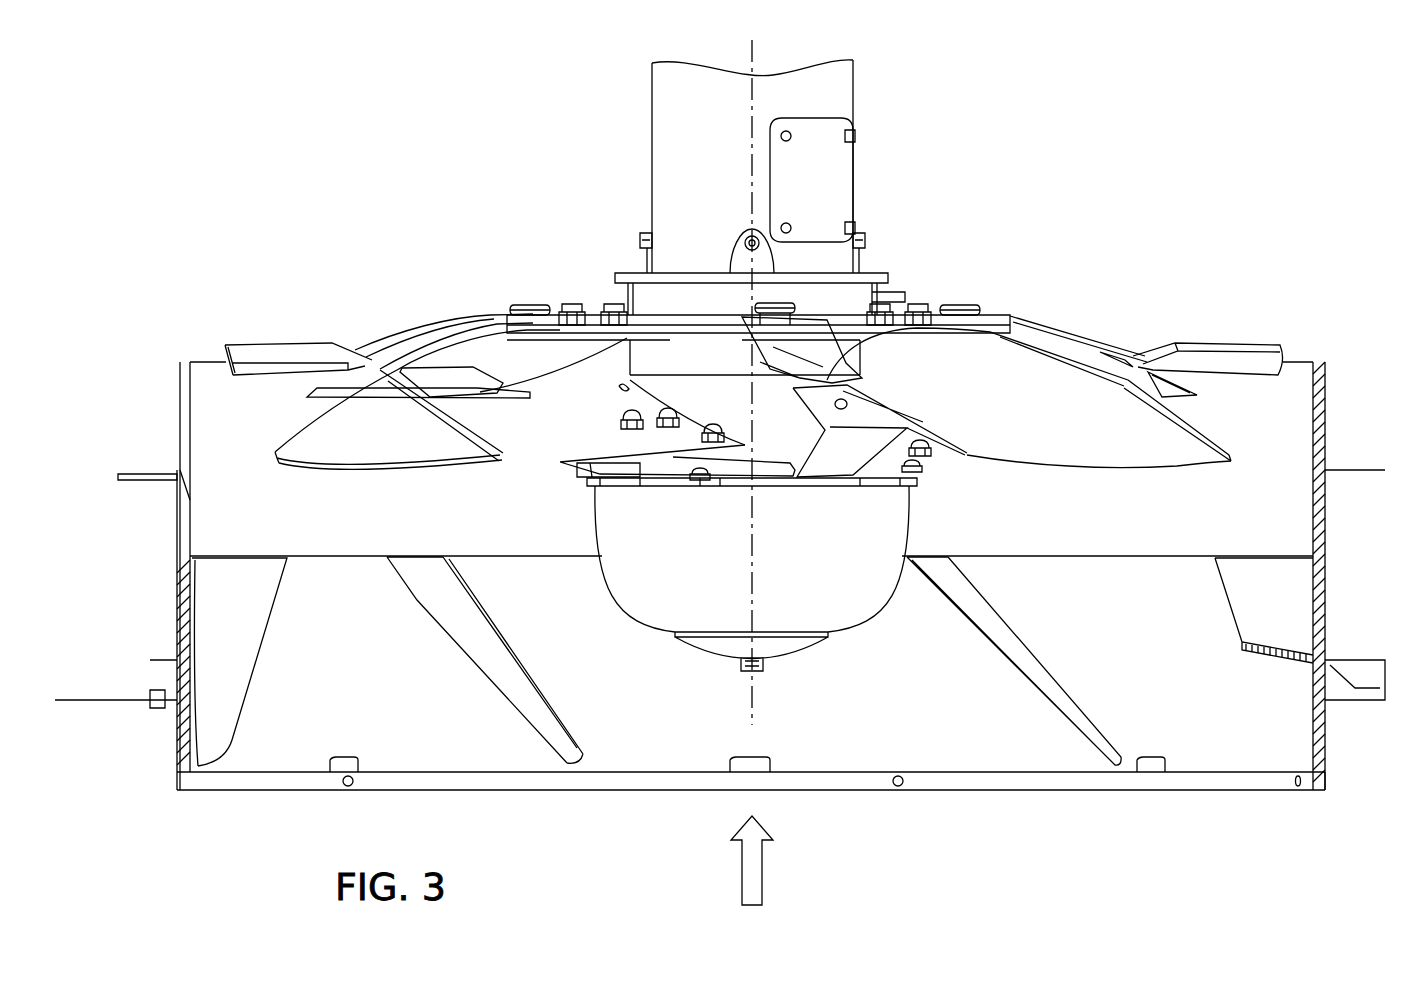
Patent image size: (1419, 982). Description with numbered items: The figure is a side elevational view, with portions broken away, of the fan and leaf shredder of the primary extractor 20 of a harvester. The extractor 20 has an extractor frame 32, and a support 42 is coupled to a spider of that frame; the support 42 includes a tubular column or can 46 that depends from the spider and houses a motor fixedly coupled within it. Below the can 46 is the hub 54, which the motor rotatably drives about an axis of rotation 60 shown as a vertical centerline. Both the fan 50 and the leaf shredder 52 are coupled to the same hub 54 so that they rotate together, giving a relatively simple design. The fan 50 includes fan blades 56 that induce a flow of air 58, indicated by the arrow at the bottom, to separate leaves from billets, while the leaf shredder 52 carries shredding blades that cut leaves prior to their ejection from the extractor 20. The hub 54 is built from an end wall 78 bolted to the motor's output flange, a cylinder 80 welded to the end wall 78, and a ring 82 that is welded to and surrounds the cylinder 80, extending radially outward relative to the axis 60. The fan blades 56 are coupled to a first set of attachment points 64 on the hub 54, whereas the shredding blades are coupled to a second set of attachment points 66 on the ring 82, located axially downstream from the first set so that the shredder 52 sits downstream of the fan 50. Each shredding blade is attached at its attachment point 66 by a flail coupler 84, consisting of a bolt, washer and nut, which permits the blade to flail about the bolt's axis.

The primary extractor 20 is at (288, 146).
The extractor frame 32 is at (1330, 600).
The support 42 is at (720, 187).
The can 46 is at (673, 181).
The fan 50 is at (1260, 447).
The leaf shredder 52 is at (1264, 327).
The hub 54 is at (922, 280).
The fan blades 56 is at (318, 465).
The flow of air 58 is at (742, 882).
The axis of rotation 60 is at (752, 56).
The first set of attachment points 64 is at (740, 478).
The second set of attachment points 66 is at (598, 345).
The end wall 78 is at (672, 487).
The cylinder 80 is at (722, 303).
The ring 82 is at (704, 300).
The flail coupler 84 is at (583, 304).